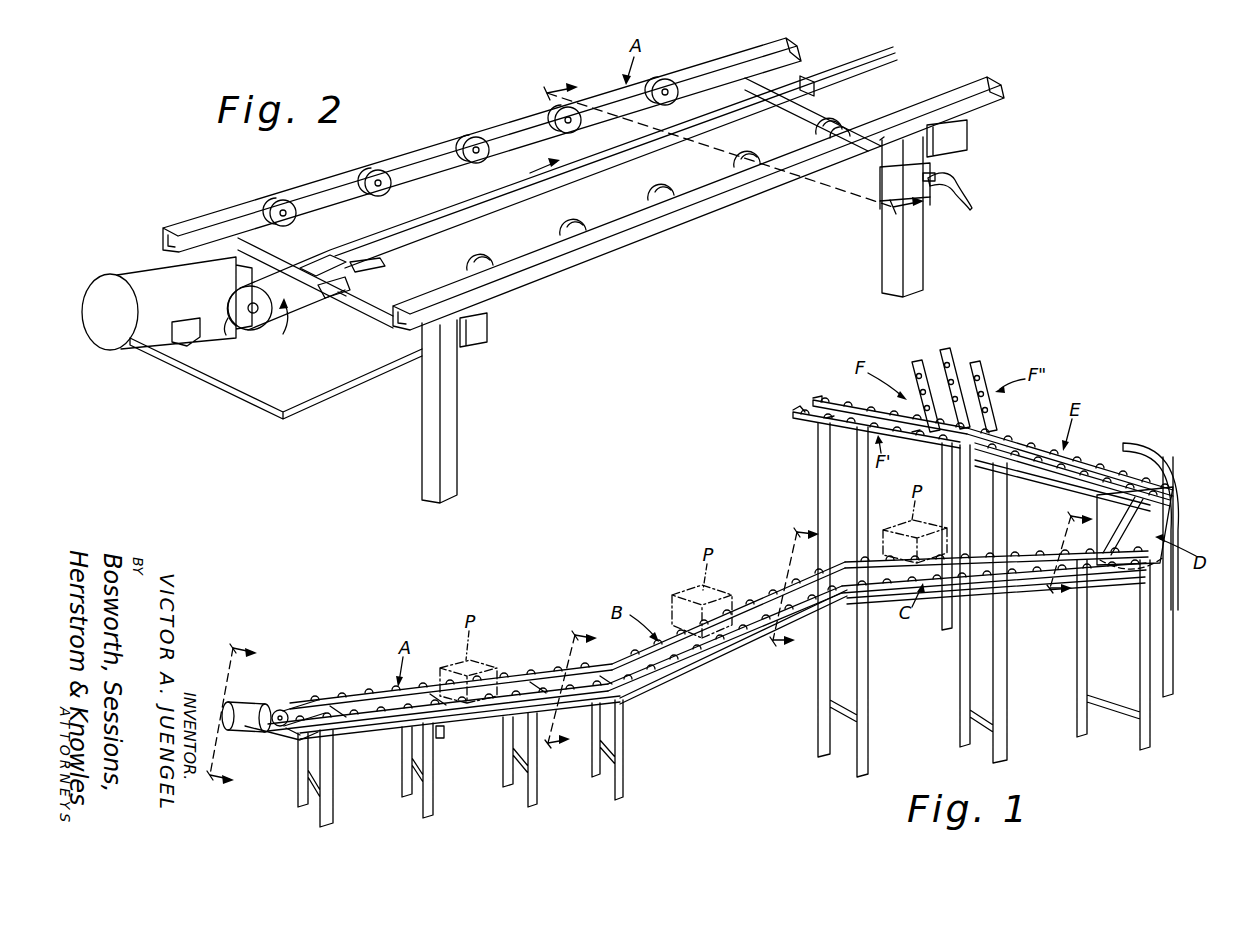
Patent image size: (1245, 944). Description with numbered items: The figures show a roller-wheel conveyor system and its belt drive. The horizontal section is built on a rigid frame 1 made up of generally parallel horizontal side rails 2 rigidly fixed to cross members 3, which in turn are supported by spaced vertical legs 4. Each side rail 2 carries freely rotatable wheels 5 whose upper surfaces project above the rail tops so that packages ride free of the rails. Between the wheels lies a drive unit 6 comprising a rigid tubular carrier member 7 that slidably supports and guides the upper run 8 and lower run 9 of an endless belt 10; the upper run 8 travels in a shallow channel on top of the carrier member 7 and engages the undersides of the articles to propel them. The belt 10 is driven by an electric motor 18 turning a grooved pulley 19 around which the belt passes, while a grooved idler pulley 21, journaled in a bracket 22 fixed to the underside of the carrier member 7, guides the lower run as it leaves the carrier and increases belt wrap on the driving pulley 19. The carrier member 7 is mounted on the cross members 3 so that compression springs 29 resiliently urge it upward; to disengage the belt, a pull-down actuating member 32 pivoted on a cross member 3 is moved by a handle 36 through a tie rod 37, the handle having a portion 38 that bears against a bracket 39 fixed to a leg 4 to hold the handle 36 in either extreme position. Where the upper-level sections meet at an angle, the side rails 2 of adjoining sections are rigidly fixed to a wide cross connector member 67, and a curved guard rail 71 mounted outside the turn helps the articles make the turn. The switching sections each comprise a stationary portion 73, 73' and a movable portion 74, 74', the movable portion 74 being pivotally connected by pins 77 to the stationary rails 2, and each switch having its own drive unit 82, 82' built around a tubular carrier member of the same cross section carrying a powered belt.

In FIG. 2, the rigid frame 1 is at (672, 236).
In FIG. 1, the rigid frame 1 is at (385, 725).
In FIG. 2, the side rails 2 is at (433, 147).
In FIG. 1, the side rails 2 is at (990, 459).
In FIG. 2, the cross members 3 is at (979, 153).
In FIG. 2, the vertical legs 4 is at (455, 386).
In FIG. 1, the vertical legs 4 is at (333, 781).
In FIG. 2, the wheels 5 is at (289, 200).
In FIG. 1, the wheels 5 is at (372, 695).
In FIG. 2, the drive unit 6 is at (523, 205).
In FIG. 1, the drive unit 6 is at (532, 678).
In FIG. 2, the tubular carrier member 7 is at (457, 226).
In FIG. 1, the tubular carrier member 7 is at (1076, 555).
In FIG. 2, the upper run 8 is at (318, 262).
In FIG. 2, the lower run 9 is at (328, 299).
In FIG. 2, the endless belt 10 is at (283, 337).
In FIG. 1, the endless belt 10 is at (285, 736).
In FIG. 2, the electric motor 18 is at (118, 275).
In FIG. 1, the electric motor 18 is at (238, 731).
In FIG. 2, the grooved pulley 19 is at (250, 331).
In FIG. 1, the grooved pulley 19 is at (280, 708).
In FIG. 2, the grooved idler pulley 21 is at (342, 294).
In FIG. 2, the bracket 22 is at (370, 266).
In FIG. 2, the compression spring 29 is at (860, 86).
In FIG. 2, the actuating member 32 is at (832, 131).
In FIG. 2, the handle 36 is at (966, 182).
In FIG. 1, the handle 36 is at (440, 739).
In FIG. 2, the tie rod 37 is at (876, 152).
In FIG. 2, the handle portion 38 is at (936, 196).
In FIG. 2, the bracket 39 is at (916, 206).
In FIG. 1, the cross connector member 67 is at (1178, 481).
In FIG. 1, the curved guard rail 71 is at (1166, 457).
In FIG. 1, the stationary portion 73 is at (782, 426).
In FIG. 1, the stationary portion 73' is at (1005, 396).
In FIG. 1, the movable portion 74 is at (924, 450).
In FIG. 1, the movable portion 74' is at (912, 386).
In FIG. 1, the pins 77 is at (828, 423).
In FIG. 1, the drive unit 82 is at (815, 387).
In FIG. 1, the drive unit 82' is at (969, 376).